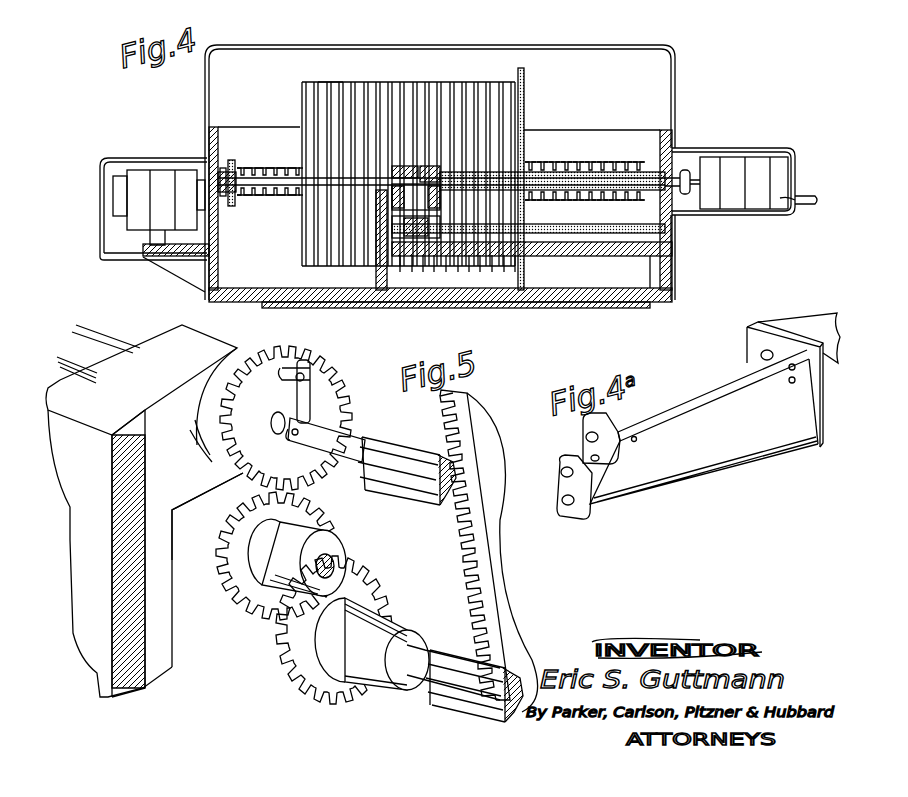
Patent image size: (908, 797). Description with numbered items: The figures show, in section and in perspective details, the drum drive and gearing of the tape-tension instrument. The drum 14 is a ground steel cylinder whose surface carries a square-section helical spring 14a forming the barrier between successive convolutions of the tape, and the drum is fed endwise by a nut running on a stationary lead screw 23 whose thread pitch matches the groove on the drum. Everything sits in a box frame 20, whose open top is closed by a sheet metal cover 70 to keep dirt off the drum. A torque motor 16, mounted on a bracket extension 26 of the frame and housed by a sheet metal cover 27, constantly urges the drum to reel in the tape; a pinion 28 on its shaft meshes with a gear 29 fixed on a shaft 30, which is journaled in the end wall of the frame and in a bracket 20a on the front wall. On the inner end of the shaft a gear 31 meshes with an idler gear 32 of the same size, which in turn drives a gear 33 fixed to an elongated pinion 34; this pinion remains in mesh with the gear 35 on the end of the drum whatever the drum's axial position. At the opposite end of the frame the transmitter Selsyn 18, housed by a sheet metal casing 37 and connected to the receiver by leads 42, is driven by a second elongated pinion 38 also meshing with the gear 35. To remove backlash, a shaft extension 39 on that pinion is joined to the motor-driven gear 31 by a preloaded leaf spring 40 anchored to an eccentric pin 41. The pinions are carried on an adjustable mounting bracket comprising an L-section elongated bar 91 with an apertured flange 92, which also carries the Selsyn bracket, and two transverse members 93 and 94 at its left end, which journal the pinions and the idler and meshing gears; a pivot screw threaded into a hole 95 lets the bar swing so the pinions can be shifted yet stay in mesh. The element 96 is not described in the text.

In FIG. 4, the drum 14 is at (306, 90).
In FIG. 4, the helical spring 14a is at (328, 82).
In FIG. 4, the torque motor 16 is at (140, 175).
In FIG. 4, the transmitter Selsyn 18 is at (742, 158).
In FIG. 4A, the transmitter Selsyn 18 is at (815, 306).
In FIG. 4, the frame 20 is at (560, 306).
In FIG. 5, the frame 20 is at (96, 675).
In FIG. 4, the bracket 20a is at (378, 278).
In FIG. 5, the bracket 20a is at (172, 540).
In FIG. 4, the lead screw 23 is at (610, 166).
In FIG. 4, the bracket extension 26 is at (160, 256).
In FIG. 4, the sheet metal cover 27 is at (104, 254).
In FIG. 4, the pinion 28 is at (234, 196).
In FIG. 4, the gear 29 is at (234, 160).
In FIG. 4, the shaft 30 is at (272, 190).
In FIG. 5, the shaft 30 is at (112, 332).
In FIG. 4, the gear 31 is at (410, 166).
In FIG. 5, the gear 31 is at (238, 484).
In FIG. 4, the idler gear 32 is at (440, 192).
In FIG. 5, the idler gear 32 is at (232, 600).
In FIG. 4, the gear 33 is at (416, 227).
In FIG. 5, the gear 33 is at (282, 676).
In FIG. 4, the elongated pinion 34 is at (625, 226).
In FIG. 5, the elongated pinion 34 is at (436, 702).
In FIG. 4, the gear 35 is at (526, 105).
In FIG. 5, the gear 35 is at (456, 552).
In FIG. 4, the sheet metal casing 37 is at (797, 160).
In FIG. 4, the elongated pinion 38 is at (580, 168).
In FIG. 5, the elongated pinion 38 is at (386, 440).
In FIG. 5, the shaft extension 39 is at (340, 430).
In FIG. 5, the leaf spring 40 is at (312, 395).
In FIG. 4, the eccentric pin 41 is at (432, 166).
In FIG. 5, the eccentric pin 41 is at (306, 366).
In FIG. 4, the leads 42 is at (808, 197).
In FIG. 4, the sheet metal cover 70 is at (605, 46).
In FIG. 4, the elongated bar 91 is at (614, 258).
In FIG. 4A, the elongated bar 91 is at (738, 425).
In FIG. 4A, the flange 92 is at (785, 316).
In FIG. 4A, the transverse member 93 is at (604, 428).
In FIG. 4A, the transverse member 94 is at (566, 460).
In FIG. 4A, the hole 95 is at (637, 440).
In FIG. 4, the support 96 is at (656, 258).